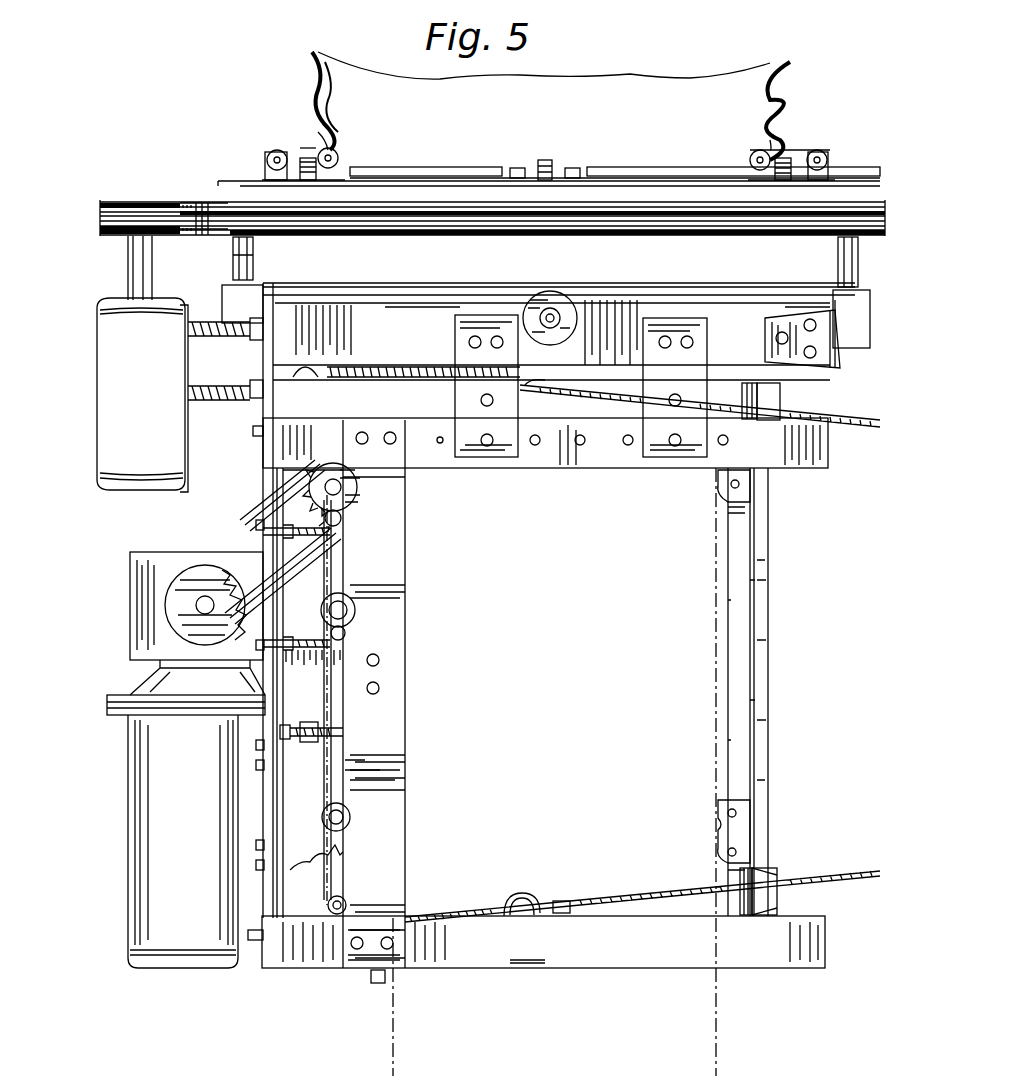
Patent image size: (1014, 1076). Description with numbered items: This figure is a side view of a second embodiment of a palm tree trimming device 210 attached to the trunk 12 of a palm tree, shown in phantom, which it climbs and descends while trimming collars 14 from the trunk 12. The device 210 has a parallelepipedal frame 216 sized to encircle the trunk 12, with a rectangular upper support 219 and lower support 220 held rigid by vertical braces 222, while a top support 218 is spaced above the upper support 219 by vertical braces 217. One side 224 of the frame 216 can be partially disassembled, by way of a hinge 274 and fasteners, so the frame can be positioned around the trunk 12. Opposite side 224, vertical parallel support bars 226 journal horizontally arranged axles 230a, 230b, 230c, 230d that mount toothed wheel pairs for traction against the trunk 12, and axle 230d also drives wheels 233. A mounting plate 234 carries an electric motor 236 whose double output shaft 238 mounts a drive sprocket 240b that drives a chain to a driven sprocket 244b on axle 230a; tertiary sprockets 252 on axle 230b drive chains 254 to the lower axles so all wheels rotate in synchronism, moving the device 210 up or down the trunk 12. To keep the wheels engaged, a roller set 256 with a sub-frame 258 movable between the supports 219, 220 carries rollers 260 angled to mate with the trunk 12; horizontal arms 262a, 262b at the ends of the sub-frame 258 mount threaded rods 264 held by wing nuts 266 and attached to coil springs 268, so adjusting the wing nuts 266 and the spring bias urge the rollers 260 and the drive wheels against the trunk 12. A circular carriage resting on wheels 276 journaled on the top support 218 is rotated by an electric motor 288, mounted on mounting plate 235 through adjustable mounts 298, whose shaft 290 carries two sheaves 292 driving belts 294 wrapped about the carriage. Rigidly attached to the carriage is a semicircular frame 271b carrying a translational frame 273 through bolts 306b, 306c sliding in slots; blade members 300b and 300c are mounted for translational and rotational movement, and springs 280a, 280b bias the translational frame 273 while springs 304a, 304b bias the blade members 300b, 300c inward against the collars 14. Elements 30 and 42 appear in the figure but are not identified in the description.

The trunk 12 is at (705, 86).
The collars 14 is at (310, 78).
The cutting blade 30 is at (800, 150).
The drive linkage rod 42 is at (262, 508).
The device 210 is at (498, 972).
The frame 216 is at (310, 985).
The braces 217 is at (742, 352).
The top support 218 is at (340, 355).
The upper support 219 is at (576, 468).
The lower support 220 is at (526, 951).
The braces 222 is at (400, 580).
The side 224 is at (788, 630).
The support bars 226 is at (283, 483).
The axle 230a is at (345, 488).
The axle 230b is at (345, 611).
The axle 230c is at (345, 815).
The axle 230d is at (345, 904).
The wheels 233 is at (330, 865).
The mounting plate 234 is at (305, 830).
The mounting plate 235 is at (283, 460).
The electric motor 236 is at (128, 838).
The double output shaft 238 is at (200, 590).
The drive sprocket 240b is at (225, 580).
The driven sprocket 244b is at (343, 518).
The tertiary sprockets 252 is at (345, 640).
The chains 254 is at (345, 740).
The roller set 256 is at (722, 725).
The sub-frame 258 is at (752, 676).
The rollers 260 is at (718, 490).
The arm 262a is at (780, 385).
The arm 262b is at (770, 868).
The threaded rods 264 is at (605, 398).
The wing nuts 266 is at (757, 398).
The coil springs 268 is at (522, 906).
The semicircular frame 271b is at (200, 205).
The translational frame 273 is at (858, 180).
The hinge 274 is at (233, 258).
The wheels 276 is at (222, 296).
The spring 280a is at (828, 150).
The spring 280b is at (266, 156).
The electric motor 288 is at (115, 403).
The shaft 290 is at (128, 260).
The sheaves 292 is at (100, 204).
The belts 294 is at (195, 205).
The adjustable mounts 298 is at (235, 400).
The blade member 300b is at (440, 138).
The blade member 300c is at (665, 152).
The spring 304a is at (780, 135).
The spring 304b is at (322, 135).
The bolt 306b is at (306, 148).
The bolt 306c is at (555, 148).